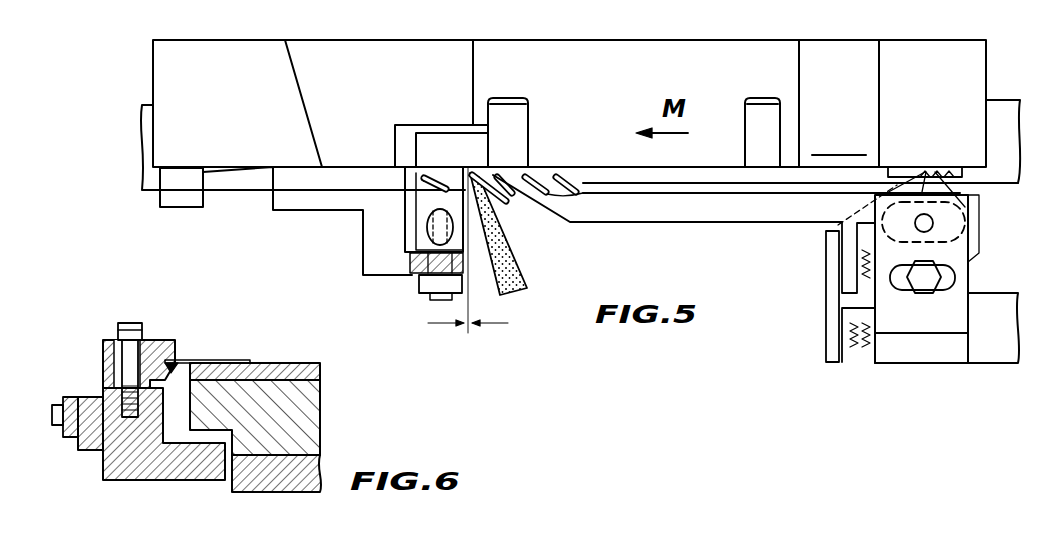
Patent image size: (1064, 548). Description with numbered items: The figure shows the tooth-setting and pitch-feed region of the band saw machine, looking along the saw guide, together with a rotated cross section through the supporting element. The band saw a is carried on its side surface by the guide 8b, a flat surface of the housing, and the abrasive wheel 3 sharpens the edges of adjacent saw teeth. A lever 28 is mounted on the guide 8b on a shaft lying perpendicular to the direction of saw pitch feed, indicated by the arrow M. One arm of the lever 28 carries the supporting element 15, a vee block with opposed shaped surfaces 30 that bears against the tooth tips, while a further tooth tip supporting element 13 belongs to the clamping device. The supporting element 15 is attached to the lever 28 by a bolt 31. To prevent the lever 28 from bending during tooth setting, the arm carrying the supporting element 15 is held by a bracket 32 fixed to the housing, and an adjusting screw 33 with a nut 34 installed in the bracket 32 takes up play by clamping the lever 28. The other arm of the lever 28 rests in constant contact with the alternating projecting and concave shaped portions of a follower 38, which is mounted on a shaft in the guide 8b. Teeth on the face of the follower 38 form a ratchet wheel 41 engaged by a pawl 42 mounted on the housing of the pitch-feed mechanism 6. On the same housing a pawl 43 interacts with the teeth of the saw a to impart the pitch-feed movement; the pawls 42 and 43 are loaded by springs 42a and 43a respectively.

In FIG. 5, the guide 8b is at (161, 62).
In FIG. 6, the guide 8b is at (312, 411).
In FIG. 5, the band saw a is at (1004, 101).
In FIG. 6, the band saw a is at (223, 362).
In FIG. 5, the tooth tip supporting element 13 is at (172, 199).
In FIG. 5, the bracket 32 is at (276, 206).
In FIG. 6, the bracket 32 is at (85, 450).
In FIG. 5, the lever 28 is at (432, 134).
In FIG. 6, the lever 28 is at (120, 470).
In FIG. 5, the supporting element 15 is at (418, 210).
In FIG. 6, the supporting element 15 is at (160, 334).
In FIG. 5, the bolt 31 is at (430, 232).
In FIG. 6, the bolt 31 is at (118, 328).
In FIG. 5, the adjusting screw 33 is at (440, 297).
In FIG. 6, the adjusting screw 33 is at (57, 405).
In FIG. 5, the nut 34 is at (458, 286).
In FIG. 6, the nut 34 is at (78, 397).
In FIG. 5, the abrasive wheel 3 is at (512, 256).
In FIG. 5, the pawl 43 is at (630, 213).
In FIG. 5, the follower 38 is at (966, 176).
In FIG. 5, the ratchet wheel 41 is at (974, 208).
In FIG. 5, the pitch-feed mechanism 6 is at (988, 297).
In FIG. 5, the pawl 42 is at (838, 259).
In FIG. 5, the spring 43a is at (858, 270).
In FIG. 5, the spring 42a is at (855, 352).
In FIG. 6, the shaped surfaces 30 is at (176, 362).